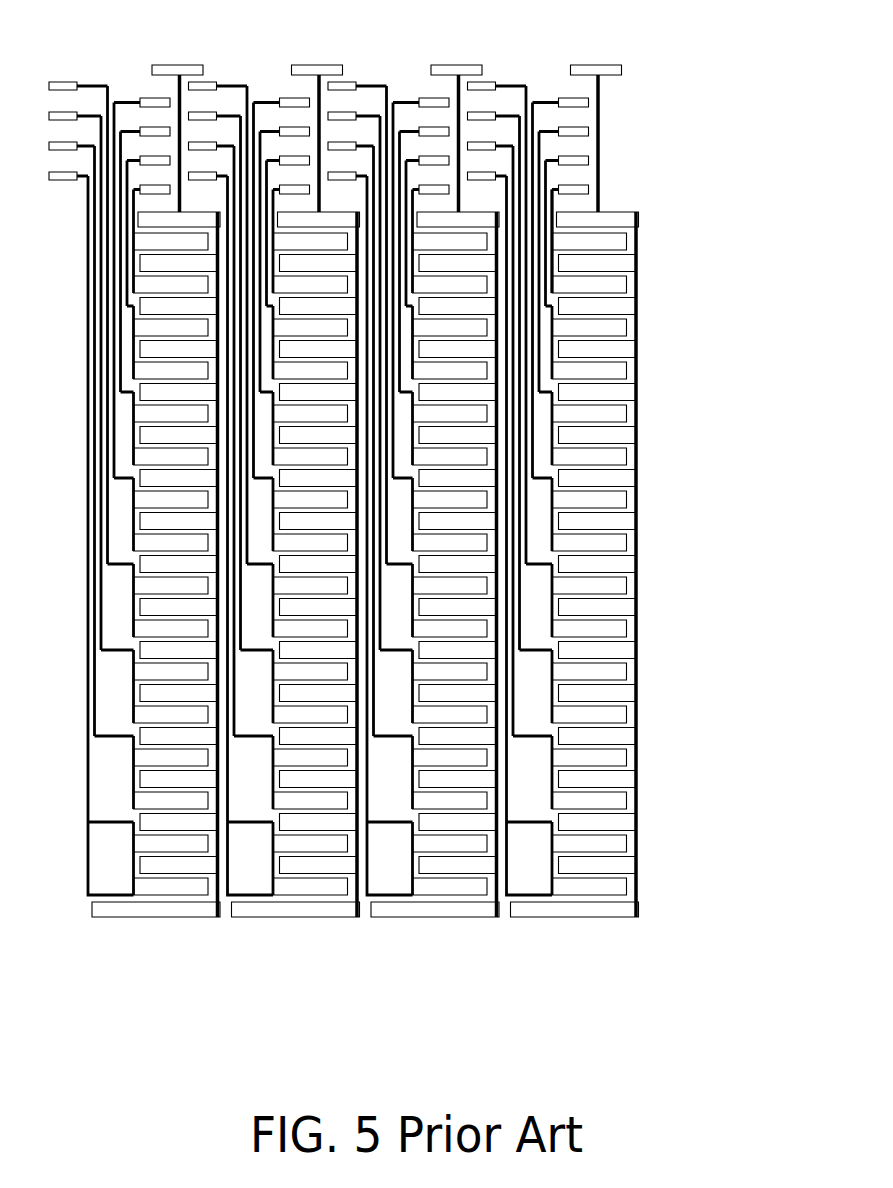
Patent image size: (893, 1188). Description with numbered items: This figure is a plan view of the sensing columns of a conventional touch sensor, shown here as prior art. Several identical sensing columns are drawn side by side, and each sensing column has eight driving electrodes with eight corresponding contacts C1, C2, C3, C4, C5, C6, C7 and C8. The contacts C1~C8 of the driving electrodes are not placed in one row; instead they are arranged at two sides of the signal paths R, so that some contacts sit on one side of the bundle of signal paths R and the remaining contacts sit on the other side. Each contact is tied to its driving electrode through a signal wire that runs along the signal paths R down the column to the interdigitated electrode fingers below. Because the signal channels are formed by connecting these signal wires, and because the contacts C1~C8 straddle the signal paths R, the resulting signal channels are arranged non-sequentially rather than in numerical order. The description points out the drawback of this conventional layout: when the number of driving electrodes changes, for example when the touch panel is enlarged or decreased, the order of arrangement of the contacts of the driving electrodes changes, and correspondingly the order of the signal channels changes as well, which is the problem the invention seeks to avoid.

The contact C1 is at (578, 193).
The contact C2 is at (585, 163).
The contact C3 is at (578, 131).
The contact C4 is at (578, 102).
The contact C5 is at (488, 82).
The contact C6 is at (488, 112).
The contact C7 is at (487, 141).
The contact C8 is at (489, 172).
The signal paths R is at (532, 295).